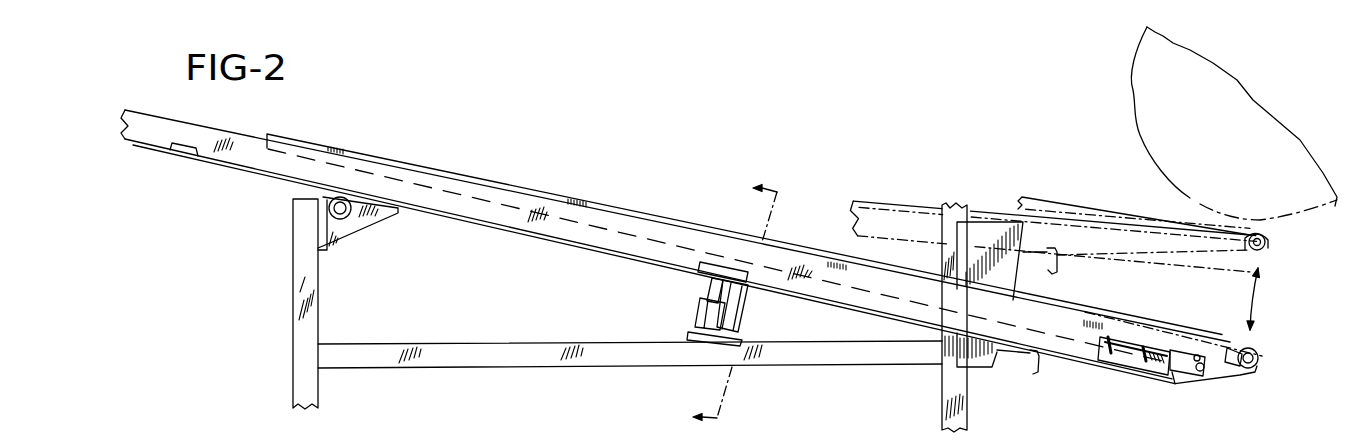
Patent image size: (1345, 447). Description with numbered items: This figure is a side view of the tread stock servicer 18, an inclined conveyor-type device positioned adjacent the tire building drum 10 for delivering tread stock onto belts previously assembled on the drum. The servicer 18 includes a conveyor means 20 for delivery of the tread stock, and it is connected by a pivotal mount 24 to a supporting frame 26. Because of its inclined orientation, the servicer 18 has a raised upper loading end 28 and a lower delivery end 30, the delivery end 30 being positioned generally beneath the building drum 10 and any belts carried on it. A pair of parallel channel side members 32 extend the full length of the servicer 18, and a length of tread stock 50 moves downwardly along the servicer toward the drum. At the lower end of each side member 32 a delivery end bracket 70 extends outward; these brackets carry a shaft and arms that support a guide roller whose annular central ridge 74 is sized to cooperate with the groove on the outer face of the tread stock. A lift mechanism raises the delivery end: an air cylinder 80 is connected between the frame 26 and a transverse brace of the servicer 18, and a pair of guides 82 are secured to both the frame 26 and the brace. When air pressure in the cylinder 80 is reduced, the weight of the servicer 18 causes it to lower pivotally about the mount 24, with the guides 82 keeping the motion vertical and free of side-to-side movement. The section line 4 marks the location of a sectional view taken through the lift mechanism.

The section line 4- 4 is at (724, 299).
The building drum 10 is at (1150, 133).
The tread stock servicer 18 is at (721, 259).
The conveyor means 20 is at (596, 203).
The pivotal mount 24 is at (348, 222).
The supporting frame 26 is at (537, 368).
The upper loading end 28 is at (270, 109).
The lower delivery end 30 is at (1131, 391).
The channel side members 32 is at (493, 217).
The tread stock 50 is at (1137, 327).
The delivery end bracket 70 is at (1227, 373).
The annular central ridge 74 is at (1273, 242).
The air cylinder 80 is at (747, 310).
The guides 82 is at (710, 313).